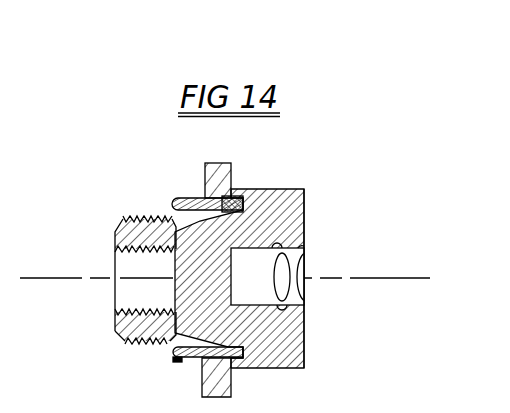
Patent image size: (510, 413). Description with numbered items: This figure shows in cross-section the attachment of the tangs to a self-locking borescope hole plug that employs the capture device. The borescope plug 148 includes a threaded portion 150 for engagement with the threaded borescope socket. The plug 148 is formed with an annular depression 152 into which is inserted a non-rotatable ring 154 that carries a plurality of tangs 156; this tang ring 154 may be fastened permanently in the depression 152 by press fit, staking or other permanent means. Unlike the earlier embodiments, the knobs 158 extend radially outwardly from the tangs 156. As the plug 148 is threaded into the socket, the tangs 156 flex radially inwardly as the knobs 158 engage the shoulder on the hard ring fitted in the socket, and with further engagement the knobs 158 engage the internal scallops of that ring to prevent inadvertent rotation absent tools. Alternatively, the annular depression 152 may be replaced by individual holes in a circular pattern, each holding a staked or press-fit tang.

The borescope plug 148 is at (300, 340).
The threaded portion 150 is at (152, 220).
The annular depression 152 is at (232, 205).
The non-rotatable ring 154 is at (289, 195).
The tangs 156 is at (192, 358).
The knobs 158 is at (175, 353).